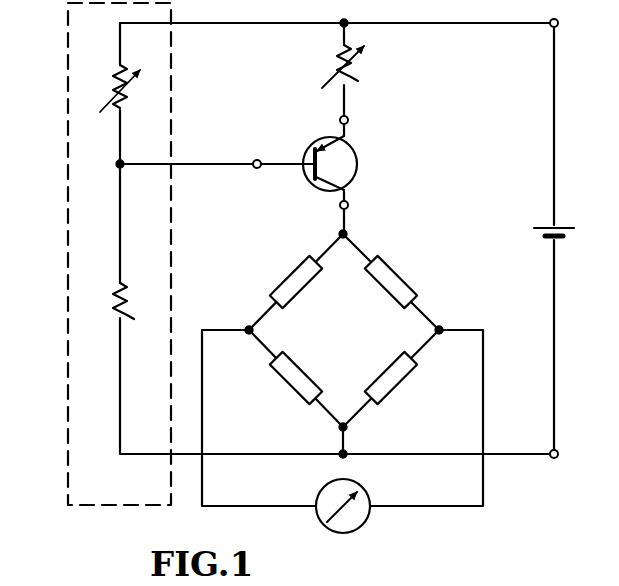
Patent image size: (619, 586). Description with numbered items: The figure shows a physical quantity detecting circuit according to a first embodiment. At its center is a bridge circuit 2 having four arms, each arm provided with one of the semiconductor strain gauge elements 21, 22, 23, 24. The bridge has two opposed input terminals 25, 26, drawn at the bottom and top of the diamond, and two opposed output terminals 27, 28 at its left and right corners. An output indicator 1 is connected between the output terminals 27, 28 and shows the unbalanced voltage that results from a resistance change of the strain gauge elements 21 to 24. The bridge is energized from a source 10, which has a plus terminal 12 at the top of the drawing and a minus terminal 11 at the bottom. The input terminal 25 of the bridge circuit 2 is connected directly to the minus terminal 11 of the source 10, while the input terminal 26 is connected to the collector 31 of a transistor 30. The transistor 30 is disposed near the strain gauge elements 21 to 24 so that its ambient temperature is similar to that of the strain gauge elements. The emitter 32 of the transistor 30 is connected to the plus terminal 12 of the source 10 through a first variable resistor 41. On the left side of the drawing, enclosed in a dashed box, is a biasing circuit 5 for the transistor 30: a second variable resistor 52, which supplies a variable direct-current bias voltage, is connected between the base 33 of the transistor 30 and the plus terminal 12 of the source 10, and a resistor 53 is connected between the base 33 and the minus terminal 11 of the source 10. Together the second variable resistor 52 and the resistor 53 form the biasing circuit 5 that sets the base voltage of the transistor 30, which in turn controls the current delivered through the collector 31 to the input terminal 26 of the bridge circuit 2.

The output indicator 1 is at (366, 494).
The bridge circuit 2 is at (350, 337).
The biasing circuit 5 is at (68, 78).
The source 10 is at (546, 228).
The minus terminal 11 is at (558, 455).
The plus terminal 12 is at (558, 26).
The semiconductor strain gauge element 21 is at (284, 272).
The semiconductor strain gauge element 22 is at (288, 393).
The semiconductor strain gauge element 23 is at (399, 390).
The semiconductor strain gauge element 24 is at (420, 272).
The input terminal 25 is at (342, 428).
The input terminal 26 is at (340, 234).
The output terminal 27 is at (248, 328).
The output terminal 28 is at (440, 330).
The transistor 30 is at (358, 164).
The collector 31 is at (348, 206).
The emitter 32 is at (348, 118).
The base 33 is at (256, 163).
The first variable resistor 41 is at (348, 75).
The second variable resistor 52 is at (122, 109).
The resistor 53 is at (122, 320).